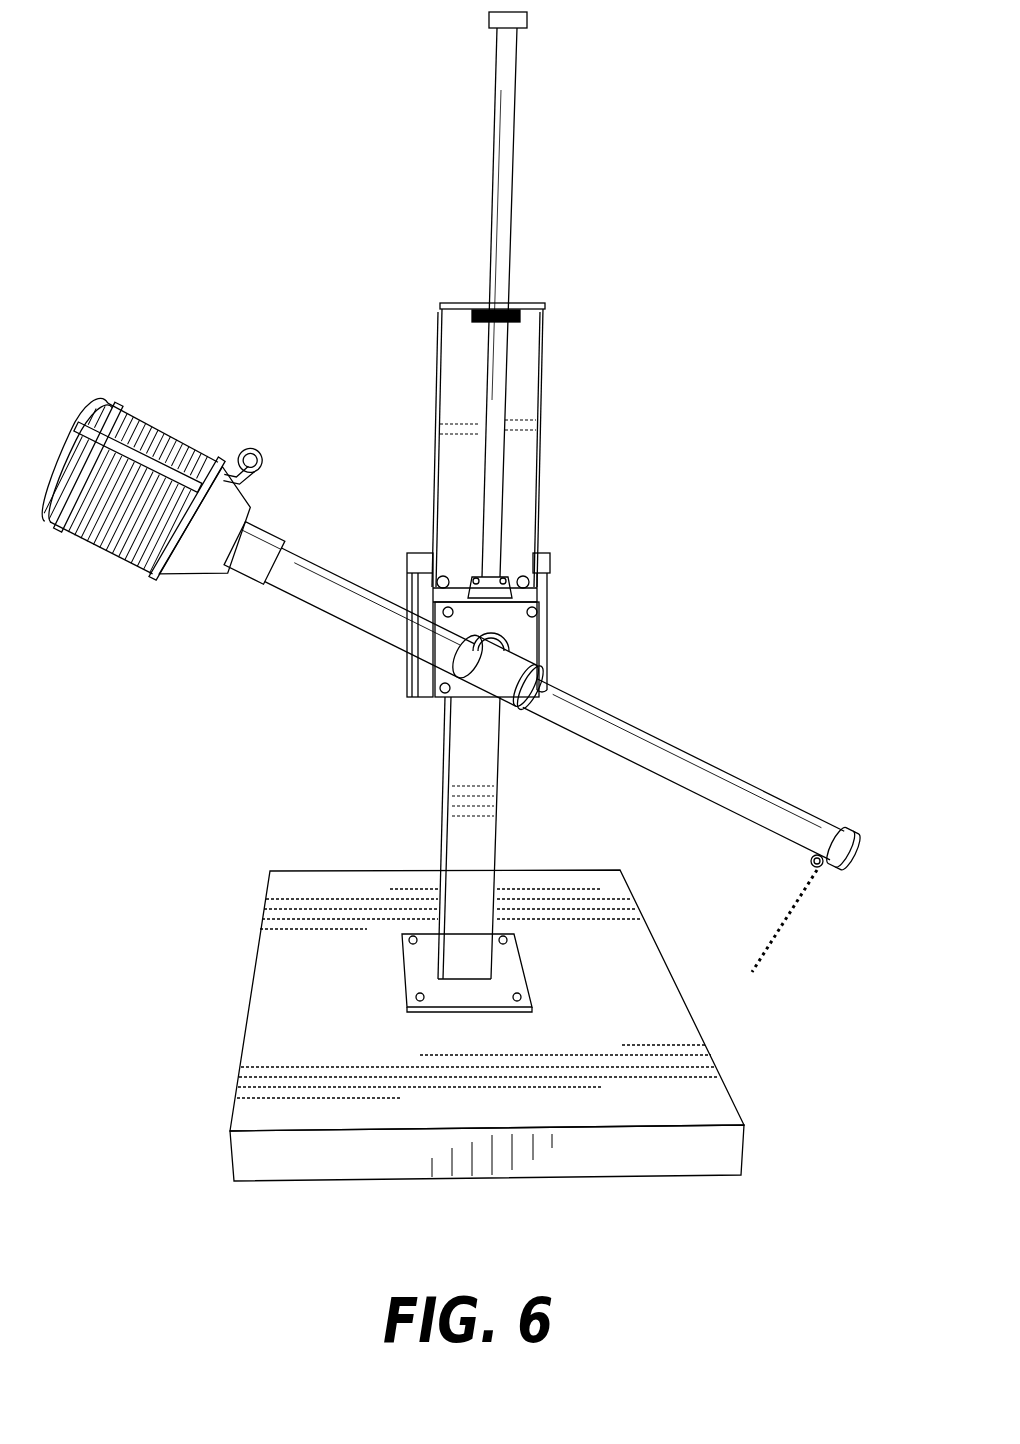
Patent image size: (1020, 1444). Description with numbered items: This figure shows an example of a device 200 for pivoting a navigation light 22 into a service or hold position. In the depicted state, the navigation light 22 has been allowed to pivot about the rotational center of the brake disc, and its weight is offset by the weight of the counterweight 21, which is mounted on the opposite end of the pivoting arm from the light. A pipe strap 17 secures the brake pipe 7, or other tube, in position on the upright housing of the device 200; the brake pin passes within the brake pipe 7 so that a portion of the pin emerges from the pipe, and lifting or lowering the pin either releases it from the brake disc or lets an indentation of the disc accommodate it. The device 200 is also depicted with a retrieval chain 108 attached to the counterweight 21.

The brake pipe 7 is at (503, 190).
The pipe strap 17 is at (506, 323).
The counterweight 21 is at (717, 785).
The navigation light 22 is at (347, 605).
The retrieval chain 108 is at (826, 889).
The device 200 is at (494, 674).